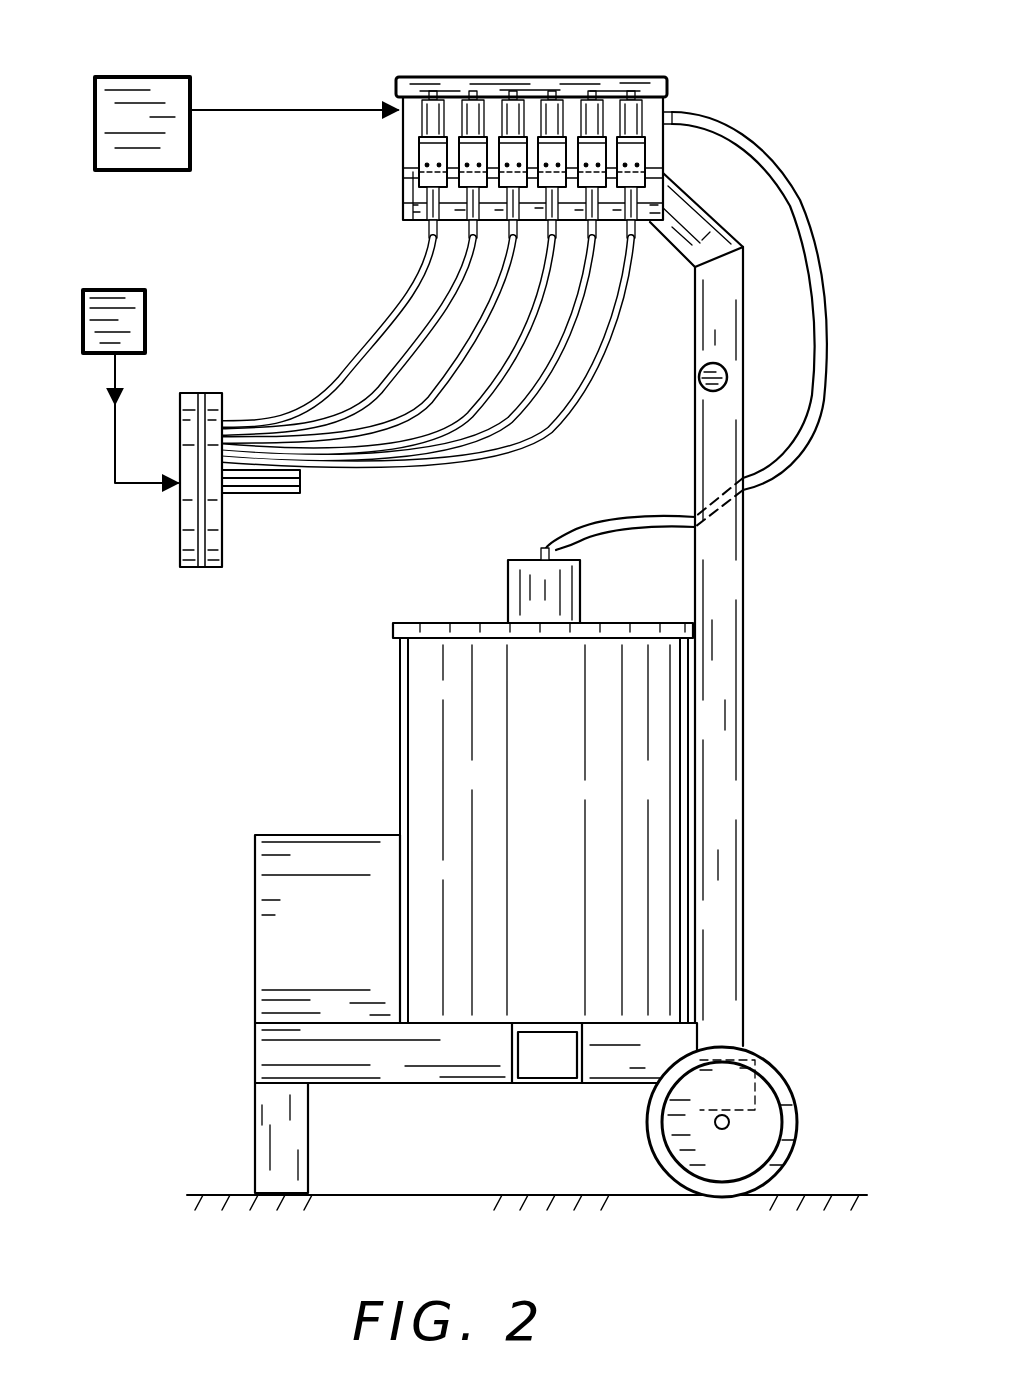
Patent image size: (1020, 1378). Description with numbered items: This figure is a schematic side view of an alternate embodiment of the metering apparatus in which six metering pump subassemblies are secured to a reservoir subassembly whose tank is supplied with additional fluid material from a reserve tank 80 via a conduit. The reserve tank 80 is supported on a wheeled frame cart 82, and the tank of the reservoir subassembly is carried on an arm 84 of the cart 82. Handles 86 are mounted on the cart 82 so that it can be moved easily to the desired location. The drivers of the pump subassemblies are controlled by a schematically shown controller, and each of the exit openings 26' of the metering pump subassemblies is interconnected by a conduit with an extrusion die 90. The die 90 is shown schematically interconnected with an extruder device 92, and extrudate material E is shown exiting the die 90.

The exit openings 26' is at (426, 351).
The extruder device 92 is at (149, 312).
The extrusion die 90 is at (186, 520).
The extrudate material E is at (258, 492).
The arm 84 is at (688, 230).
The handles 86 is at (700, 378).
The reserve tank 80 is at (457, 742).
The wheeled frame cart 82 is at (452, 1053).